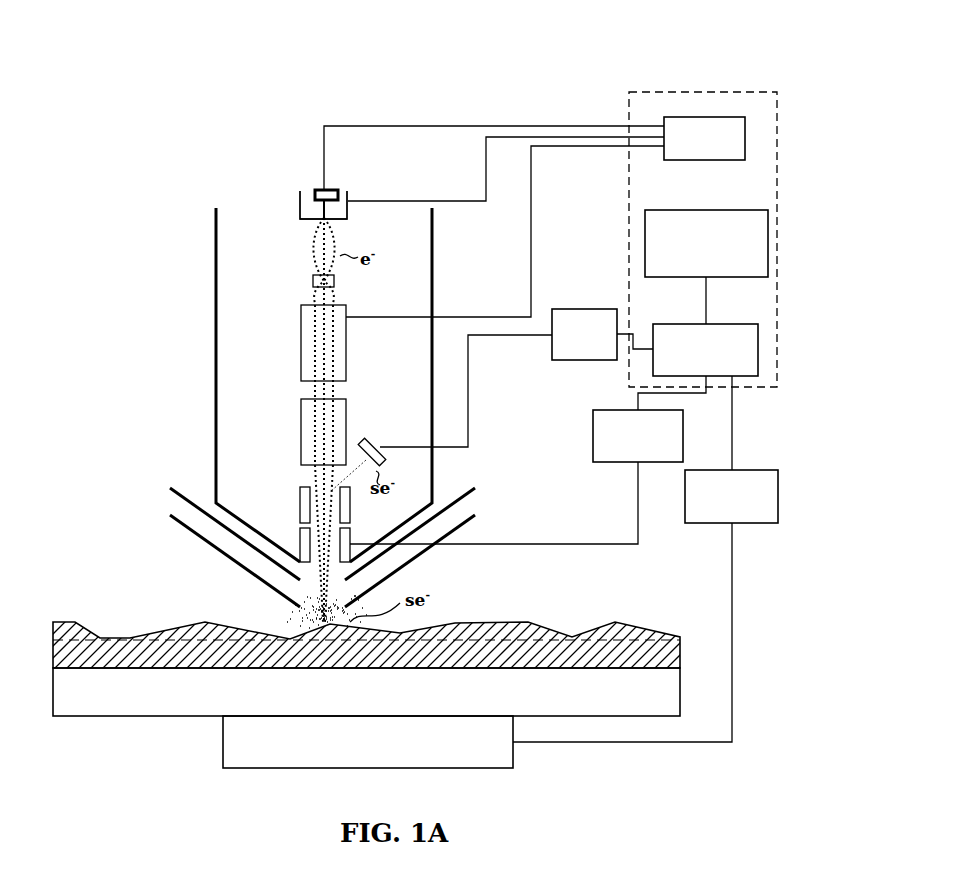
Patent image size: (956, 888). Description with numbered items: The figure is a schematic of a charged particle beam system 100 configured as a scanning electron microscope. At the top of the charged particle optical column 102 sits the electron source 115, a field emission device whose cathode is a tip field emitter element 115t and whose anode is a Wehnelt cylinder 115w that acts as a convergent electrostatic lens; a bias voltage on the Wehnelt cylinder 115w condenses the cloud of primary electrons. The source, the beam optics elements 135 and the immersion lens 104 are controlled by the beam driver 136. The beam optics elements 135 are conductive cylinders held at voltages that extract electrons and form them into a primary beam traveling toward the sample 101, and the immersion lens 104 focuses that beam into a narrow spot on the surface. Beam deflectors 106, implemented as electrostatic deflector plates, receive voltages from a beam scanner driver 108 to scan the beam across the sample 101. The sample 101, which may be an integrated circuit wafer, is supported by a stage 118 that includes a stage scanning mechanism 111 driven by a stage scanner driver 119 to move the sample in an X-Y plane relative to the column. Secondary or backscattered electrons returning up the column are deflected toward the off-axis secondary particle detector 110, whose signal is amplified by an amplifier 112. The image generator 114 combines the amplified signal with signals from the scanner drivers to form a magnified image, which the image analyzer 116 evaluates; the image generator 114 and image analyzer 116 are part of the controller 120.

The charged particle beam system 100 is at (108, 80).
The sample 101 is at (685, 638).
The charged particle optical column 102 is at (215, 308).
The immersion lens 104 is at (238, 567).
The beam deflectors 106 is at (300, 540).
The beam scanner driver 108 is at (613, 462).
The secondary particle detector 110 is at (378, 441).
The stage scanning mechanism 111 is at (368, 742).
The amplifier 112 is at (580, 360).
The image generator 114 is at (744, 378).
The electron source 115 is at (302, 192).
The field emitter element 115t is at (316, 200).
The Wehnelt cylinder 115w is at (349, 208).
The image analyzer 116 is at (703, 210).
The stage 118 is at (366, 692).
The stage scanner driver 119 is at (745, 523).
The controller 120 is at (629, 242).
The beam optics elements 135 is at (346, 425).
The beam driver 136 is at (704, 117).